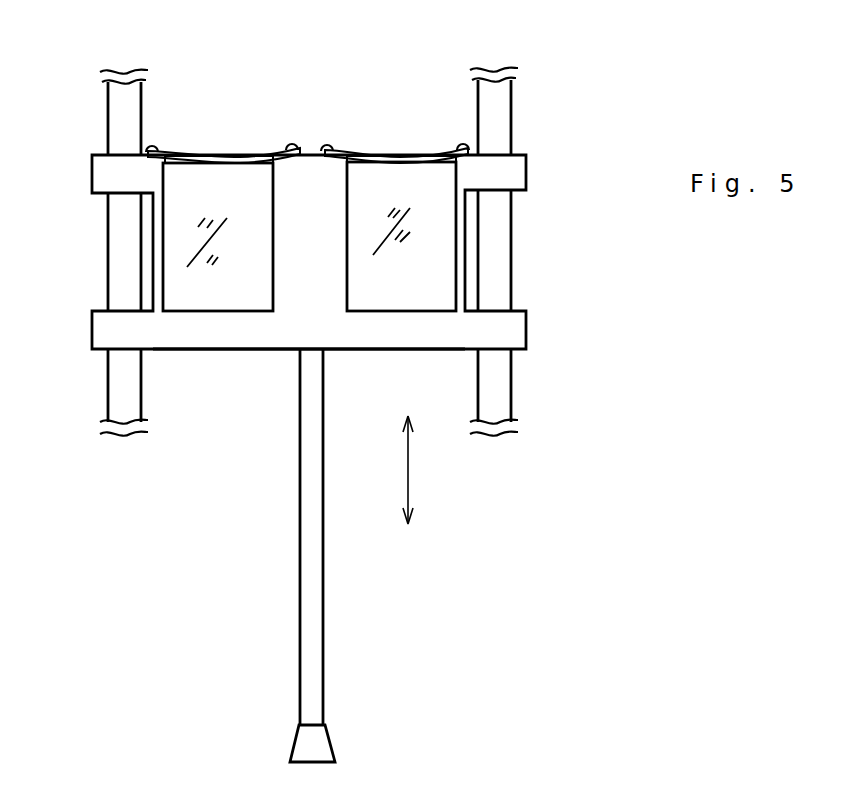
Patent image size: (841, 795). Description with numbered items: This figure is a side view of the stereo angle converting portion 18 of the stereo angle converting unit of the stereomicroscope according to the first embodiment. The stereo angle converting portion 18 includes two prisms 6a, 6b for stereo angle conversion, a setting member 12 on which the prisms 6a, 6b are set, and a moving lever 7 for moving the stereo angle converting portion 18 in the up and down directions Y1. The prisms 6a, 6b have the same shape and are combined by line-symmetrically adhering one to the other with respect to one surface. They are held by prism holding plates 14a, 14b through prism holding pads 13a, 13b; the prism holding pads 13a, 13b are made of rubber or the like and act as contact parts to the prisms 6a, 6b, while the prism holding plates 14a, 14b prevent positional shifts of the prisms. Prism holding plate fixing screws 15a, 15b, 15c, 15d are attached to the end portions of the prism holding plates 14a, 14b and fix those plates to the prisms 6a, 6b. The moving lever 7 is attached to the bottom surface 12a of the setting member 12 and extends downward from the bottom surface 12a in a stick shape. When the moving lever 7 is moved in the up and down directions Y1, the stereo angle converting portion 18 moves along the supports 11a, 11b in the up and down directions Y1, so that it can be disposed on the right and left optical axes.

The prism 6a is at (370, 293).
The prism 6b is at (189, 298).
The moving lever 7 is at (323, 690).
The support 11a is at (511, 113).
The support 11b is at (107, 110).
The setting member 12 is at (508, 330).
The bottom surface 12a is at (252, 352).
The prism holding pad 13a is at (410, 155).
The prism holding pad 13b is at (230, 158).
The prism holding plate 14a is at (368, 150).
The prism holding plate 14b is at (188, 150).
The prism holding plate fixing screw 15a is at (327, 145).
The prism holding plate fixing screw 15b is at (463, 144).
The prism holding plate fixing screw 15c is at (292, 144).
The prism holding plate fixing screw 15d is at (152, 146).
The stereo angle converting portion 18 is at (197, 460).
The up and down directions Y1 is at (410, 492).